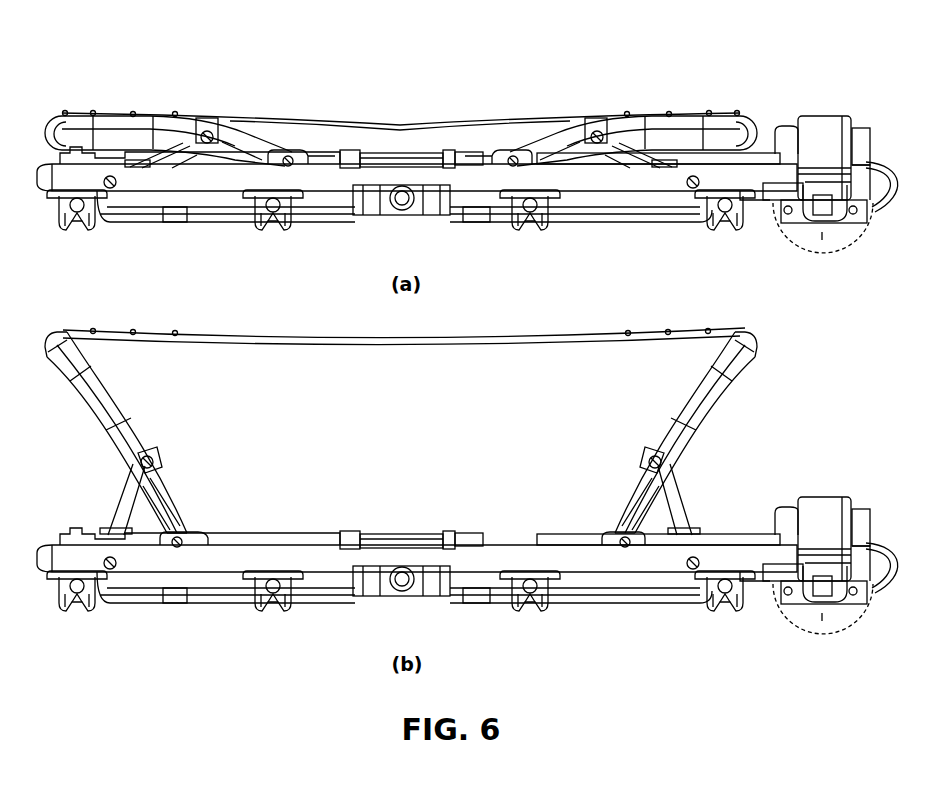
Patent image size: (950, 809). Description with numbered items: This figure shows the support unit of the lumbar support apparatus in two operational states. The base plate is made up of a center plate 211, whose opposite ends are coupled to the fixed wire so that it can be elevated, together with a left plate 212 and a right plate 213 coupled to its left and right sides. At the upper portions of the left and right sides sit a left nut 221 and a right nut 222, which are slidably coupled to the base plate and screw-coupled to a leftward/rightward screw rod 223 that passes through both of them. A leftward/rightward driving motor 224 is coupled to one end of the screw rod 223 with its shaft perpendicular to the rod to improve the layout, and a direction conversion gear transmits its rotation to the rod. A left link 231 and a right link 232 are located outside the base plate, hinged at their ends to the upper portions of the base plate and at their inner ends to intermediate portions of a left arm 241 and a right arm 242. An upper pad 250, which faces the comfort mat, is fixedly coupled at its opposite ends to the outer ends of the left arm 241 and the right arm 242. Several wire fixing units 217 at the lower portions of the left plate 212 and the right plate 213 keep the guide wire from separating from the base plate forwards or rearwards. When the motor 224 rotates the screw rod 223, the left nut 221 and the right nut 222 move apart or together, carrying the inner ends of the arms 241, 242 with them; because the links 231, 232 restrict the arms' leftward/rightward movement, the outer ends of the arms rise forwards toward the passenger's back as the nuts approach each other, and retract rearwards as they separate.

The center plate 211 is at (372, 203).
The left plate 212 is at (202, 188).
The right plate 213 is at (577, 180).
The wire fixing unit 217 is at (88, 232).
The left nut 221 is at (293, 147).
The right nut 222 is at (515, 153).
The leftward/rightward screw rod 223 is at (418, 160).
The leftward/rightward driving motor 224 is at (797, 233).
The left link 231 is at (152, 147).
The right link 232 is at (657, 140).
The left arm 241 is at (178, 115).
The right arm 242 is at (622, 118).
The upper pad 250 is at (367, 120).